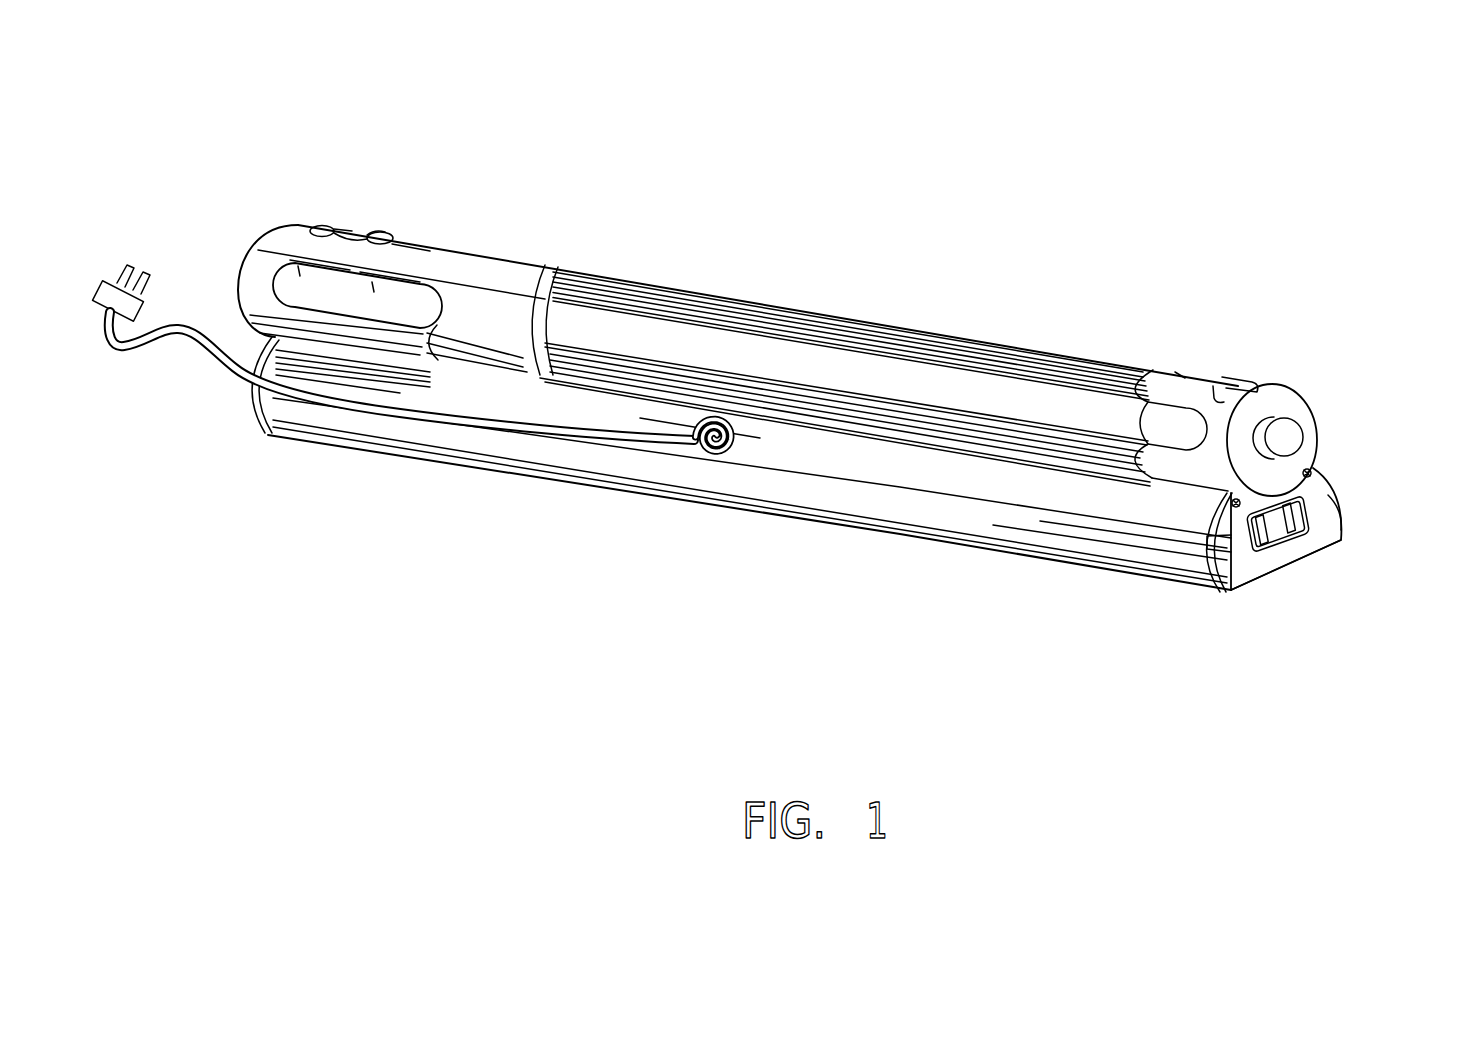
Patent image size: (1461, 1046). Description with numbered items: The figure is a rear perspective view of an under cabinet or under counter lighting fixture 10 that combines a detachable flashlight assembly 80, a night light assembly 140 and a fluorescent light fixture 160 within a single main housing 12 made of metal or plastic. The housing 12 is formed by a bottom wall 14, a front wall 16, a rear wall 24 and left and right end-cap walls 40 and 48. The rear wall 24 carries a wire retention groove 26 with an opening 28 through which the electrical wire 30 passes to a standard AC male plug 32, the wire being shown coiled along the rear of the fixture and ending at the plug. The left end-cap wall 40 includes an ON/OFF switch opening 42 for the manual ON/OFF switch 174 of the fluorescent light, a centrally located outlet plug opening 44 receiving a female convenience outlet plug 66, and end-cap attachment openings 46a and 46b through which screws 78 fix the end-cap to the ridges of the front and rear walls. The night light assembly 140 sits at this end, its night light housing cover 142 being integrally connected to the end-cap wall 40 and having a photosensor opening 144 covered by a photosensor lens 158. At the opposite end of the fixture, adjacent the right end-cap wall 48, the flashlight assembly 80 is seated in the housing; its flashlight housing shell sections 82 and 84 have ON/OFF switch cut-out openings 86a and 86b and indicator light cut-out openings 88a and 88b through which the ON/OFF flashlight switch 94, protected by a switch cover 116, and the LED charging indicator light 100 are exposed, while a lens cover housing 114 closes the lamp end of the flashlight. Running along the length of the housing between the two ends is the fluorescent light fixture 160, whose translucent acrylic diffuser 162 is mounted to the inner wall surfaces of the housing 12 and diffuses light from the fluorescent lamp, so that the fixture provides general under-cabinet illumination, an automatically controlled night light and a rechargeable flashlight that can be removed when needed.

The under cabinet/counter lighting fixture 10 is at (964, 241).
The main housing 12 is at (1030, 562).
The bottom wall 14 is at (1270, 567).
The front wall 16 is at (1337, 480).
The rear wall 24 is at (594, 403).
The wire retention groove 26 is at (918, 495).
The opening 28 is at (683, 422).
The electrical wire 30 is at (152, 350).
The AC male plug 32 is at (147, 297).
The left end-cap wall 40 is at (1240, 452).
The ON/OFF switch opening 42 is at (1265, 417).
The outlet plug opening 44 is at (1293, 540).
The end-cap attachment opening 46a is at (1227, 500).
The end-cap attachment opening 46b is at (1328, 490).
The right end-cap wall 48 is at (250, 233).
The female convenience outlet plug 66 is at (1300, 520).
The screws 78 is at (1302, 471).
The flashlight assembly 80 is at (468, 240).
The flashlight housing shell section 82 is at (276, 248).
The flashlight housing shell section 84 is at (293, 223).
The ON/OFF switch cut-out opening 86a is at (313, 283).
The ON/OFF switch cut-out opening 86b is at (320, 226).
The indicator light cut-out opening 88a is at (385, 298).
The indicator light cut-out opening 88b is at (388, 236).
The ON/OFF flashlight switch 94 is at (397, 235).
The LED charging indicator light 100 is at (343, 226).
The lens cover housing 114 is at (523, 262).
The switch cover 116 is at (400, 238).
The night light assembly 140 is at (1222, 350).
The night light housing cover 142 is at (1182, 367).
The photosensor opening 144 is at (1196, 387).
The photosensor lens 158 is at (1243, 377).
The fluorescent light fixture 160 is at (708, 268).
The translucent acrylic diffuser 162 is at (592, 270).
The manual ON/OFF switch 174 is at (1285, 440).